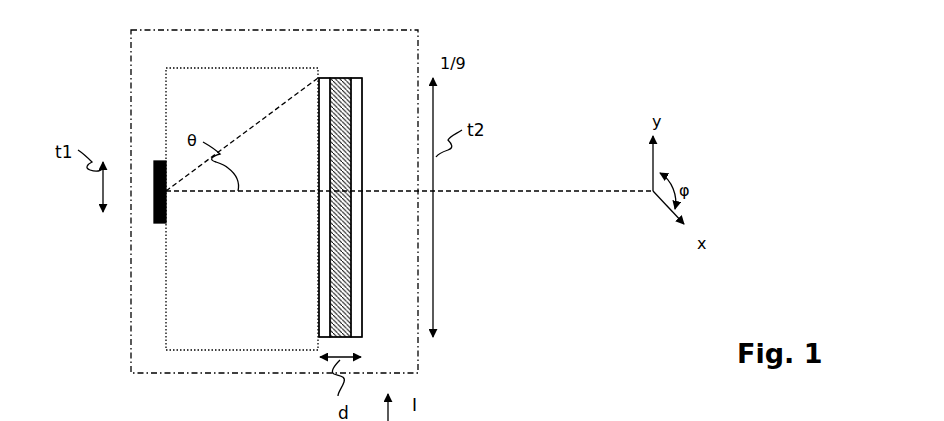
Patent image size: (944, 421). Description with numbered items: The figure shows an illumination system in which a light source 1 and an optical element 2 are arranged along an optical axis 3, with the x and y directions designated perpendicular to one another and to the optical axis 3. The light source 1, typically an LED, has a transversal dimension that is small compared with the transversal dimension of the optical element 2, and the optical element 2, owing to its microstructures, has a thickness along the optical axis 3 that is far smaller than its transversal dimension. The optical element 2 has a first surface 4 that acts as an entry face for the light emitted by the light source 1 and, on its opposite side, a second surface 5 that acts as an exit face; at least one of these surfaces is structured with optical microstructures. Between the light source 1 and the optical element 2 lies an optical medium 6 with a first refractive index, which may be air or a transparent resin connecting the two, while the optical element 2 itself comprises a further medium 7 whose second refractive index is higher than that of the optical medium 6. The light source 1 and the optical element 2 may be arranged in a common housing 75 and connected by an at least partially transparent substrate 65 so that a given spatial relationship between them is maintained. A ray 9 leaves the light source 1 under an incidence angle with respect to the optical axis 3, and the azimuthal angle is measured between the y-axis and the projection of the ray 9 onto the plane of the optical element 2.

The light source 1 is at (157, 224).
The optical element 2 is at (340, 187).
The optical axis 3 is at (591, 190).
The first surface 4 is at (322, 250).
The second surface 5 is at (355, 186).
The optical medium 6 is at (242, 209).
The further medium 7 is at (340, 84).
The ray 9 is at (254, 128).
The at least partially transparent substrate 65 is at (166, 100).
The common housing 75 is at (131, 60).